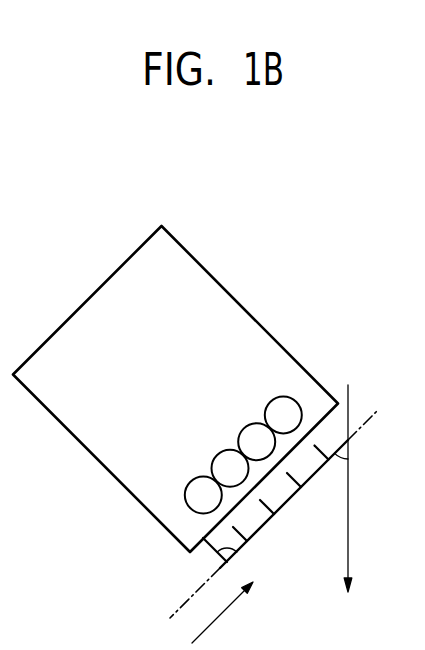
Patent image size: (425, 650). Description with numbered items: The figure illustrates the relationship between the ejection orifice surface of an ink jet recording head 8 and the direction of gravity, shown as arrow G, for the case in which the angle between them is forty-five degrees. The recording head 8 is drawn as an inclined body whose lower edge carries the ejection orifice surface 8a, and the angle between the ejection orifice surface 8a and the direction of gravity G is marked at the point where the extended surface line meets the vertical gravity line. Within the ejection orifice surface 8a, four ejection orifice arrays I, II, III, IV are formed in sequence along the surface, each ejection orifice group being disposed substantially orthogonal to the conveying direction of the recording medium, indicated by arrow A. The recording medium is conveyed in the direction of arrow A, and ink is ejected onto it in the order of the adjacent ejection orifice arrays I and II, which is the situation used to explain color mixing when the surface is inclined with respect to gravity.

The recording head 8 is at (192, 277).
The ejection orifice surface 8a is at (218, 551).
The ejection orifice array I is at (247, 547).
The ejection orifice array II is at (276, 521).
The ejection orifice array III is at (304, 494).
The ejection orifice array IV is at (330, 470).
The direction of gravity G is at (335, 489).
The conveying direction A is at (222, 612).